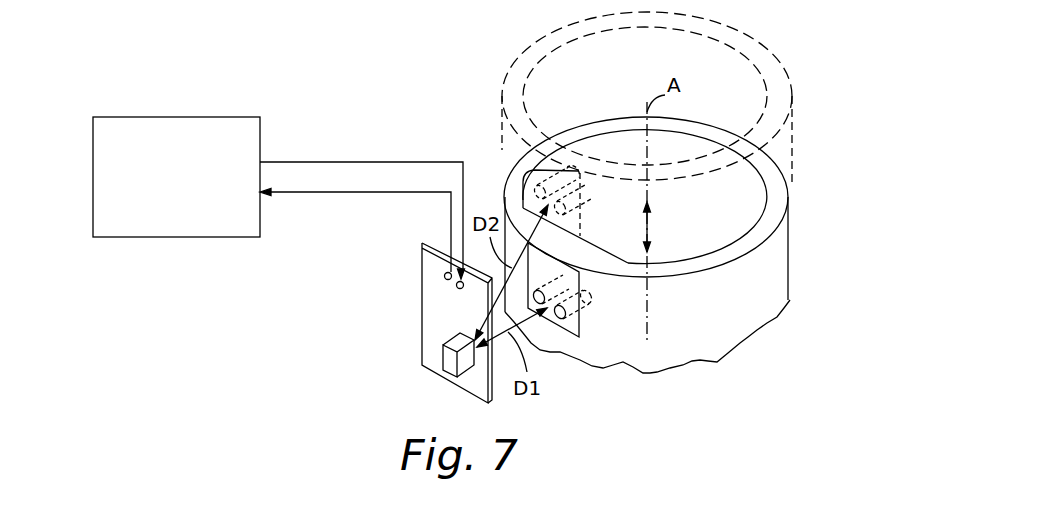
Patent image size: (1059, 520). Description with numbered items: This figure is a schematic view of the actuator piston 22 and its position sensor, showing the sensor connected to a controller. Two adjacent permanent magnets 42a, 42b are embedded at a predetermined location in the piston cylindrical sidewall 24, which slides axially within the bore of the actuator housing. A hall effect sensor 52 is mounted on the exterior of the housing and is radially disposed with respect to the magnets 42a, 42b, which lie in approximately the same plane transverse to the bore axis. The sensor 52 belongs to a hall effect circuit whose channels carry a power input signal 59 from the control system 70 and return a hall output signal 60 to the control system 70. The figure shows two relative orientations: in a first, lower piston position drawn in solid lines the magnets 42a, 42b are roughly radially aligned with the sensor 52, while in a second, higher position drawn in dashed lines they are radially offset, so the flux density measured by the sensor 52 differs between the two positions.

The piston 22 is at (794, 67).
The piston cylindrical sidewall 24 is at (713, 332).
The magnet 42a is at (537, 168).
The magnet 42b is at (535, 153).
The hall effect sensor 52 is at (455, 368).
The power input signal 59 is at (403, 162).
The hall output signal 60 is at (376, 195).
The control system 70 is at (179, 212).